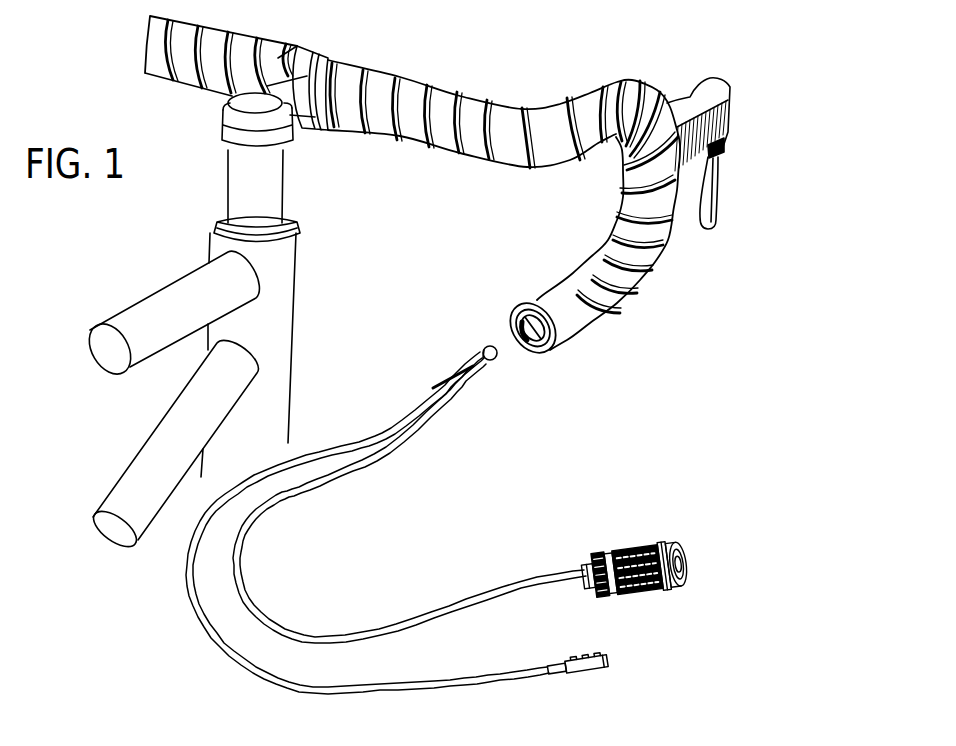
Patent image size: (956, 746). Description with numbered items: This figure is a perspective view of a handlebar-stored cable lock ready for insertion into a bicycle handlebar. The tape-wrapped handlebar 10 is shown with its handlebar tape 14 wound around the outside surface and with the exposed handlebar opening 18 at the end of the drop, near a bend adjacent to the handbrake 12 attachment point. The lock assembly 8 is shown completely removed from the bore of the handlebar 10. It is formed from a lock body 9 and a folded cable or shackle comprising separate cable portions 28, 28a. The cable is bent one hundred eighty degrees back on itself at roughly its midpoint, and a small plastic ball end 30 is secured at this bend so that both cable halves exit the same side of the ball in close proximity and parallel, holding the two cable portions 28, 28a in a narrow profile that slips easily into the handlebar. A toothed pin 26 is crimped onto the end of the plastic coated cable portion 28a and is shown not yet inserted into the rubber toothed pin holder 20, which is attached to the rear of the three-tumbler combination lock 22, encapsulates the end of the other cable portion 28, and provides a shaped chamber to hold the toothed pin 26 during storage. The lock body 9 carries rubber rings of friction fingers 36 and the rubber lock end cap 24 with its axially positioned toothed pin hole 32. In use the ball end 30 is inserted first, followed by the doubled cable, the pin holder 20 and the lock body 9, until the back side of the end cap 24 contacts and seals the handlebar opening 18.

The lock assembly 8 is at (650, 516).
The lock body 9 is at (657, 547).
The bicycle handlebar 10 is at (497, 77).
The handbrake 12 is at (707, 110).
The handlebar tape 14 is at (377, 107).
The handlebar opening 18 is at (537, 300).
The toothed pin holder 20 is at (587, 563).
The three-tumbler combination lock 22 is at (614, 552).
The lock end cap 24 is at (683, 550).
The toothed pin 26 is at (578, 677).
The cable portion 28 is at (250, 588).
The cable portion 28a is at (248, 663).
The ball end 30 is at (482, 347).
The toothed pin hole 32 is at (688, 567).
The friction fingers 36 is at (595, 558).